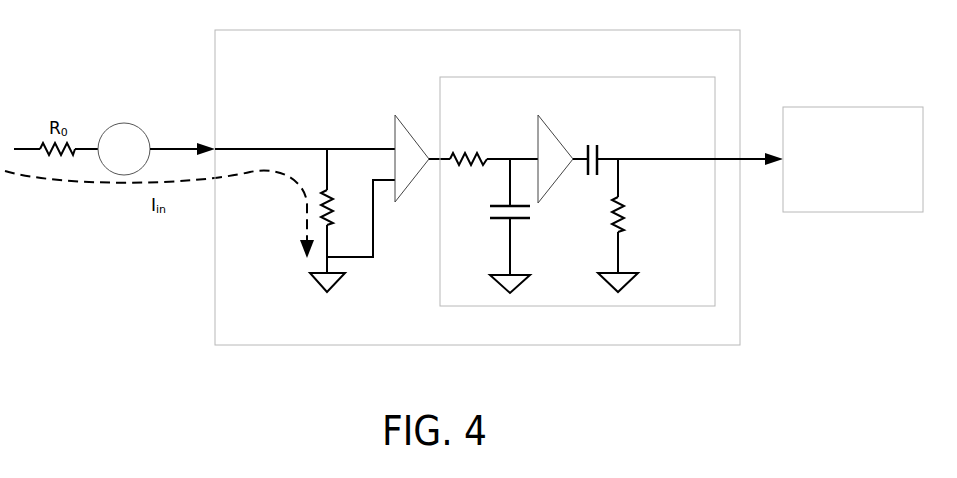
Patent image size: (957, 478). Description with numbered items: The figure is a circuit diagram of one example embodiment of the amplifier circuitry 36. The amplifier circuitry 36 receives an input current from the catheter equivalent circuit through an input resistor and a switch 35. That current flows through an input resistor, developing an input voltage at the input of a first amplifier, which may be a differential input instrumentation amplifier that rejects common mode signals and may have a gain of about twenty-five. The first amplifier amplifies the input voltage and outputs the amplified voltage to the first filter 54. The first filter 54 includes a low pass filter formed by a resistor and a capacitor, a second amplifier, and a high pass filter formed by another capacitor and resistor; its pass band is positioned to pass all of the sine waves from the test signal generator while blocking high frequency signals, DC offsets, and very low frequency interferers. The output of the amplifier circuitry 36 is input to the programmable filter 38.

The switch 35 is at (124, 134).
The amplifier circuitry 36 is at (402, 60).
The first filter 54 is at (531, 103).
The programmable filter 38 is at (889, 185).